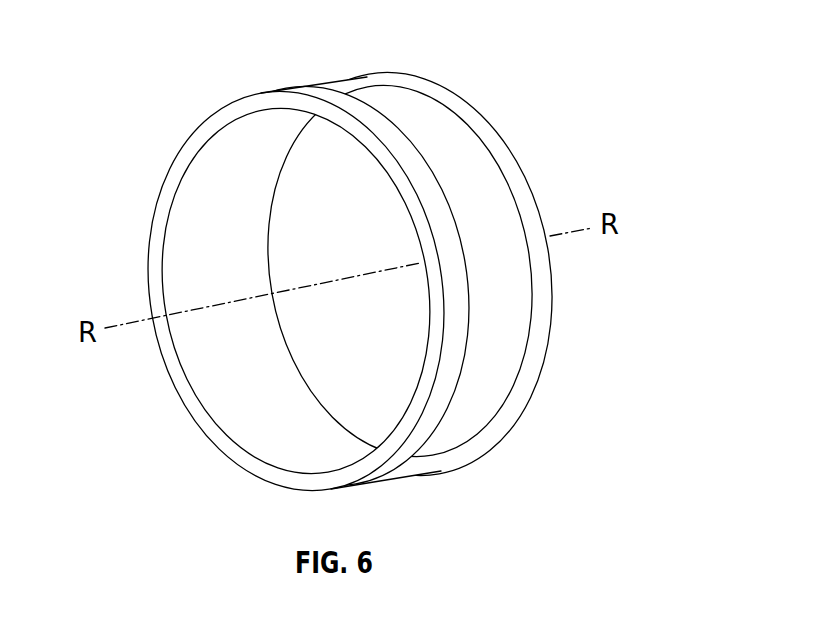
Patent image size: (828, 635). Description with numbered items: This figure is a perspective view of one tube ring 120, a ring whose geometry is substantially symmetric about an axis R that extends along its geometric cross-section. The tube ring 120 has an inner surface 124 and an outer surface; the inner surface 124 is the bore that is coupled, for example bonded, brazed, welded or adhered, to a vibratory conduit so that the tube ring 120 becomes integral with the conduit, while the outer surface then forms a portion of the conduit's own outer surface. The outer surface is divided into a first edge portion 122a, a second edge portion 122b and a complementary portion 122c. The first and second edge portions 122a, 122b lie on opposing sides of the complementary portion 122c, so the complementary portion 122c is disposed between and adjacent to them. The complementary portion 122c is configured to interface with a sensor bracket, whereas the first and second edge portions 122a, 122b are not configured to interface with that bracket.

The tube ring 120 is at (497, 135).
The first edge portion 122a is at (313, 80).
The second edge portion 122b is at (516, 425).
The complementary portion 122c is at (437, 462).
The inner surface 124 is at (305, 407).